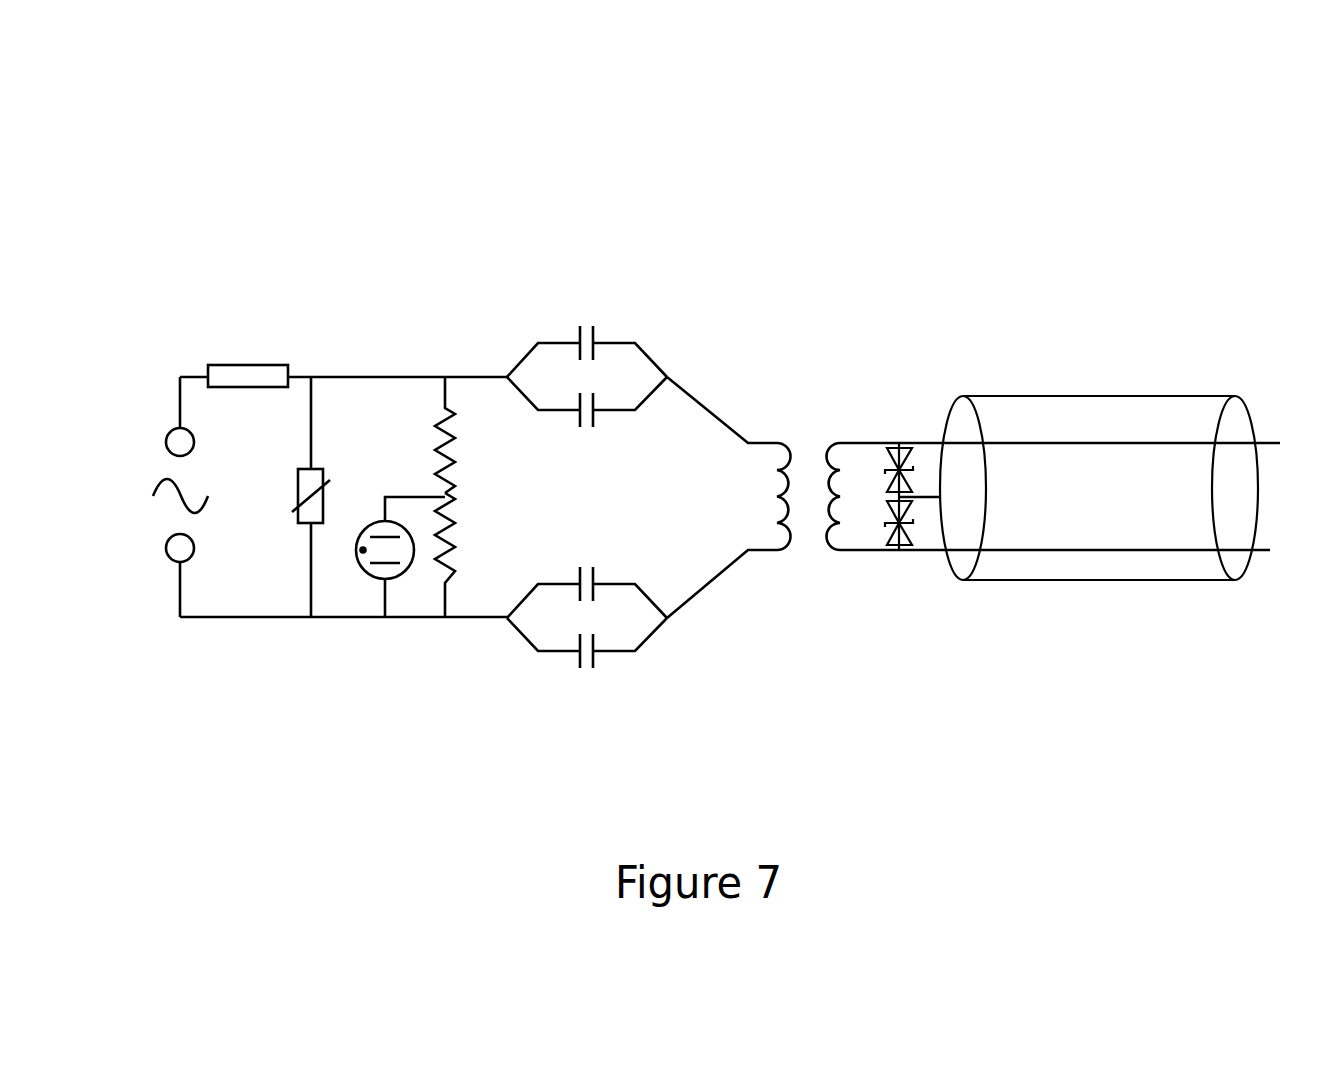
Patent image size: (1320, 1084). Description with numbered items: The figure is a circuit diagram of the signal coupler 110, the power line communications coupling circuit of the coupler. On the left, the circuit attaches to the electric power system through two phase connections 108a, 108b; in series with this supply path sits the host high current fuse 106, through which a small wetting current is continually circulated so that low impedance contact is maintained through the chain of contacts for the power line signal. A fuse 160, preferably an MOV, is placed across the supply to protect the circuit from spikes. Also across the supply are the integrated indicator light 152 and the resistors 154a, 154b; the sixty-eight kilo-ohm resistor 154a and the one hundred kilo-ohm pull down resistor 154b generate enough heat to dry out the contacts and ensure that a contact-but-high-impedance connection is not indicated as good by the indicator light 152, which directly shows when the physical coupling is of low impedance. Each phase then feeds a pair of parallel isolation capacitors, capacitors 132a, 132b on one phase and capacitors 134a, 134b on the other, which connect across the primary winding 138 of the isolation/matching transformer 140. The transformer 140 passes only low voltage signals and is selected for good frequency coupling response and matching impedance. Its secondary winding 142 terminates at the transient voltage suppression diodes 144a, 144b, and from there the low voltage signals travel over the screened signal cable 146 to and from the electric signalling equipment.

The high current fuse 106 is at (263, 365).
The phase connection 108a is at (180, 395).
The phase connection 108b is at (180, 588).
The signal coupler 110 is at (839, 288).
The isolation capacitor 132a is at (597, 333).
The isolation capacitor 132b is at (578, 400).
The isolation capacitor 134a is at (578, 593).
The isolation capacitor 134b is at (597, 657).
The primary winding 138 is at (790, 453).
The isolation/matching transformer 140 is at (792, 574).
The secondary winding 142 is at (828, 445).
The diode 144a is at (887, 465).
The diode 144b is at (887, 537).
The screened signal cable 146 is at (1135, 477).
The integrated indicator light 152 is at (367, 572).
The resistor 154a is at (435, 432).
The pull down resistor 154b is at (455, 558).
The fuse 160 is at (300, 523).